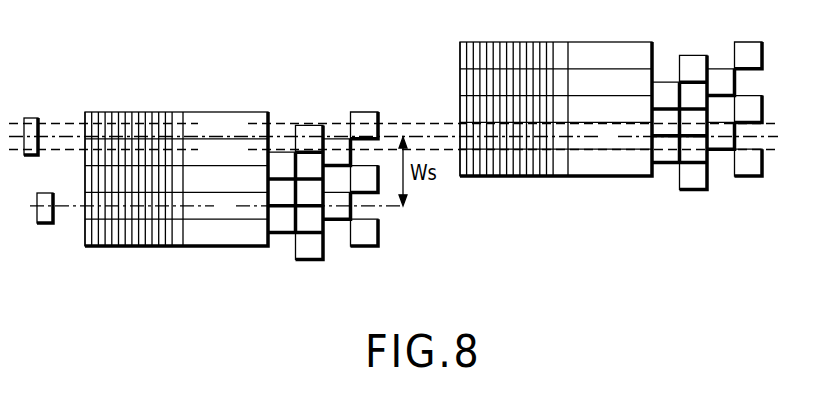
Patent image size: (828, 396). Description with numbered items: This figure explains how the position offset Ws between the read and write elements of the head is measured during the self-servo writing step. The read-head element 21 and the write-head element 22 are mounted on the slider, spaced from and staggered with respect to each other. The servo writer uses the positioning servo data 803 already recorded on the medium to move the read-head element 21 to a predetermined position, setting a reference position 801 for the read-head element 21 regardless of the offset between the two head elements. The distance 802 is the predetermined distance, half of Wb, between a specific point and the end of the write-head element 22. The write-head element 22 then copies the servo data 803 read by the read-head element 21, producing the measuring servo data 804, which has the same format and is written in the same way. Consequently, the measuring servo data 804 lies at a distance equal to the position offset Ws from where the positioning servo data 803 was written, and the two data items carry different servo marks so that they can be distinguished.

The read-head element 21 is at (43, 224).
The write-head element 22 is at (27, 117).
The reference position 801 is at (407, 206).
The distance 802 is at (413, 128).
The positioning servo data 803 is at (380, 260).
The measuring servo data 804 is at (765, 198).